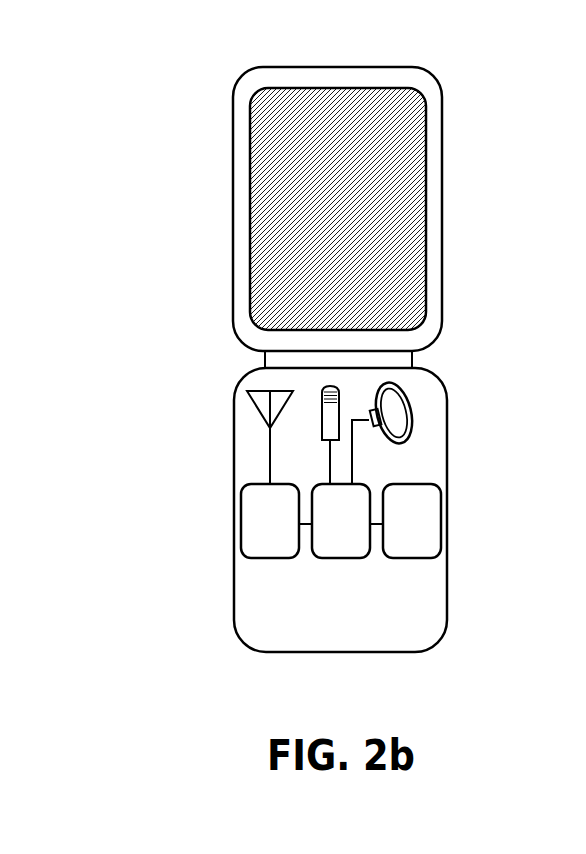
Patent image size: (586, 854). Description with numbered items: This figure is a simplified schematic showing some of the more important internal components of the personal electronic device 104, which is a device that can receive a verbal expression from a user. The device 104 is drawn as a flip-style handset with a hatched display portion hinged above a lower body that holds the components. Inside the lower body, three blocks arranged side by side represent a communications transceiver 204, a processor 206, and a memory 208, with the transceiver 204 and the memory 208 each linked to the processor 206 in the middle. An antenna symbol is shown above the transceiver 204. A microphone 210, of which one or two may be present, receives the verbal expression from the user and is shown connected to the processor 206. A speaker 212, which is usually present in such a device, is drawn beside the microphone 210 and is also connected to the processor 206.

The personal electronic device 104 is at (280, 62).
The communications transceiver 204 is at (291, 531).
The processor 206 is at (362, 531).
The memory 208 is at (433, 531).
The microphone 210 is at (324, 377).
The speaker 212 is at (406, 382).